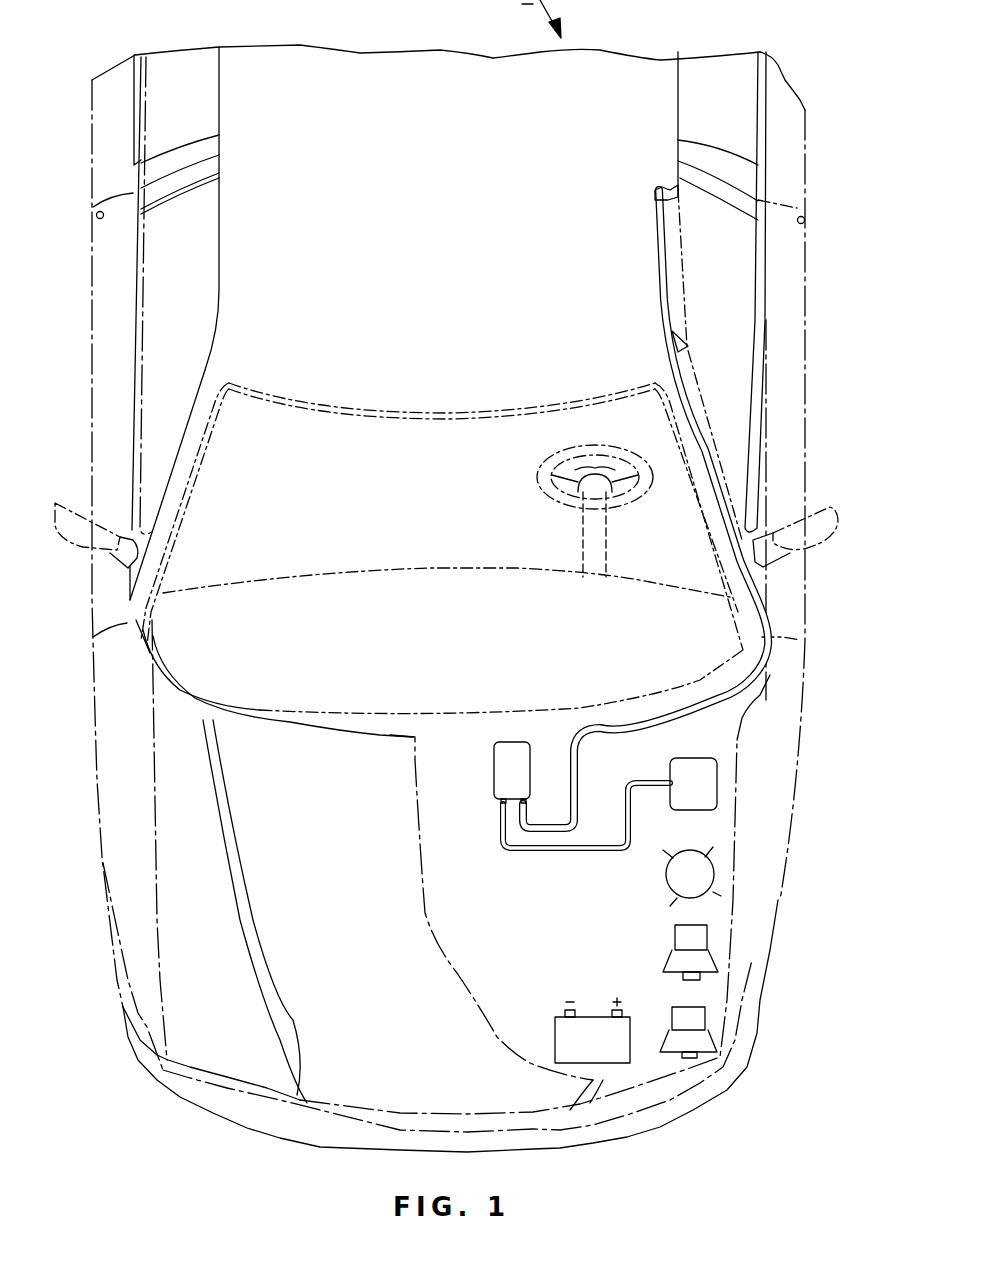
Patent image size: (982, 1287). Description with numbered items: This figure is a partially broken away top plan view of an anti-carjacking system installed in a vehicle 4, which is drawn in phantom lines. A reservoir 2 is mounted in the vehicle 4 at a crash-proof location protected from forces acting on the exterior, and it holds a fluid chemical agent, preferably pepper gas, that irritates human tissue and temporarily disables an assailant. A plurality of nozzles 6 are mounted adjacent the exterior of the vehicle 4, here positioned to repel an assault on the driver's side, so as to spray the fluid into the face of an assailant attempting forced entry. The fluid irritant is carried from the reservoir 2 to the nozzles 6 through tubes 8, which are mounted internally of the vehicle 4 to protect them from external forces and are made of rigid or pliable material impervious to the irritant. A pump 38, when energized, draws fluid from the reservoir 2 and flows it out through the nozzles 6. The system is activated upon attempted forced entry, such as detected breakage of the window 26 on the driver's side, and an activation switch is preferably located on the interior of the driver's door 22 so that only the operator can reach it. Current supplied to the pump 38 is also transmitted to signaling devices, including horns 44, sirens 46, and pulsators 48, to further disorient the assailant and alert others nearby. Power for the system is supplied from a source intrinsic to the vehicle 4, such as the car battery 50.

The reservoir 2 is at (720, 782).
The vehicle 4 is at (92, 278).
The nozzles 6 is at (678, 192).
The tubes 8 is at (767, 612).
The driver's door 22 is at (807, 340).
The window 26 is at (750, 263).
The pump 38 is at (495, 765).
The horns 44 is at (707, 1020).
The sirens 46 is at (707, 942).
The pulsators 48 is at (717, 867).
The car battery 50 is at (553, 1034).